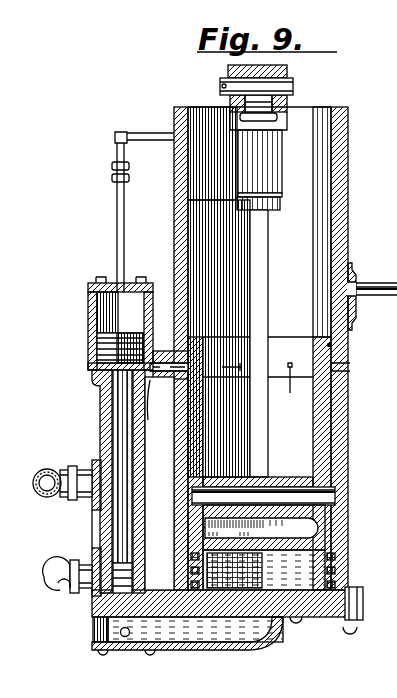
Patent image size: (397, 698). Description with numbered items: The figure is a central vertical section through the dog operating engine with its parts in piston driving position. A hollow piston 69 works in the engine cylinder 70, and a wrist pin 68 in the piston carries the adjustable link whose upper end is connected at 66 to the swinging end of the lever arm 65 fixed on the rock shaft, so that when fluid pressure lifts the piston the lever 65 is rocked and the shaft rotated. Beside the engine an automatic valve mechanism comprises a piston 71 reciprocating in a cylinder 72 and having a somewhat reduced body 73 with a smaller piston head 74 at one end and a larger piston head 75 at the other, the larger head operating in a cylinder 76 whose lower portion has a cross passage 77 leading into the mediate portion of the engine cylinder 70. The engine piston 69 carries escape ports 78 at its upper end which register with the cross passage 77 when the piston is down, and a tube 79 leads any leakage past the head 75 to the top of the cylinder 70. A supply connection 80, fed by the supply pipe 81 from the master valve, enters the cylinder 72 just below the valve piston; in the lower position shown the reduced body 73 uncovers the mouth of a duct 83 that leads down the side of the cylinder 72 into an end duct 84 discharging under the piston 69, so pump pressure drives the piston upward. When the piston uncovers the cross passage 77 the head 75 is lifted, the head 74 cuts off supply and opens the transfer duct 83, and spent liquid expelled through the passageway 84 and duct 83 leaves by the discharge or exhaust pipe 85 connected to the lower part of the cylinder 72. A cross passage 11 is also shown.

The passage 11 is at (88, 368).
The lever arm 65 is at (287, 72).
The connection 66 is at (293, 88).
The wrist pin 68 is at (345, 483).
The hollow piston 69 is at (318, 443).
The cylinder 70 is at (345, 222).
The piston 71 is at (117, 426).
The cylinder 72 is at (95, 405).
The reduced body 73 is at (122, 517).
The piston head 74 is at (97, 560).
The larger piston head 75 is at (96, 343).
The cylinder 76 is at (88, 300).
The cross passage 77 is at (159, 483).
The escape ports 78 is at (242, 367).
The tube 79 is at (125, 214).
The supply connection 80 is at (81, 470).
The supply pipe 81 is at (40, 470).
The duct 83 is at (130, 568).
The end duct 84 is at (210, 637).
The discharge or exhaust pipe 85 is at (66, 590).